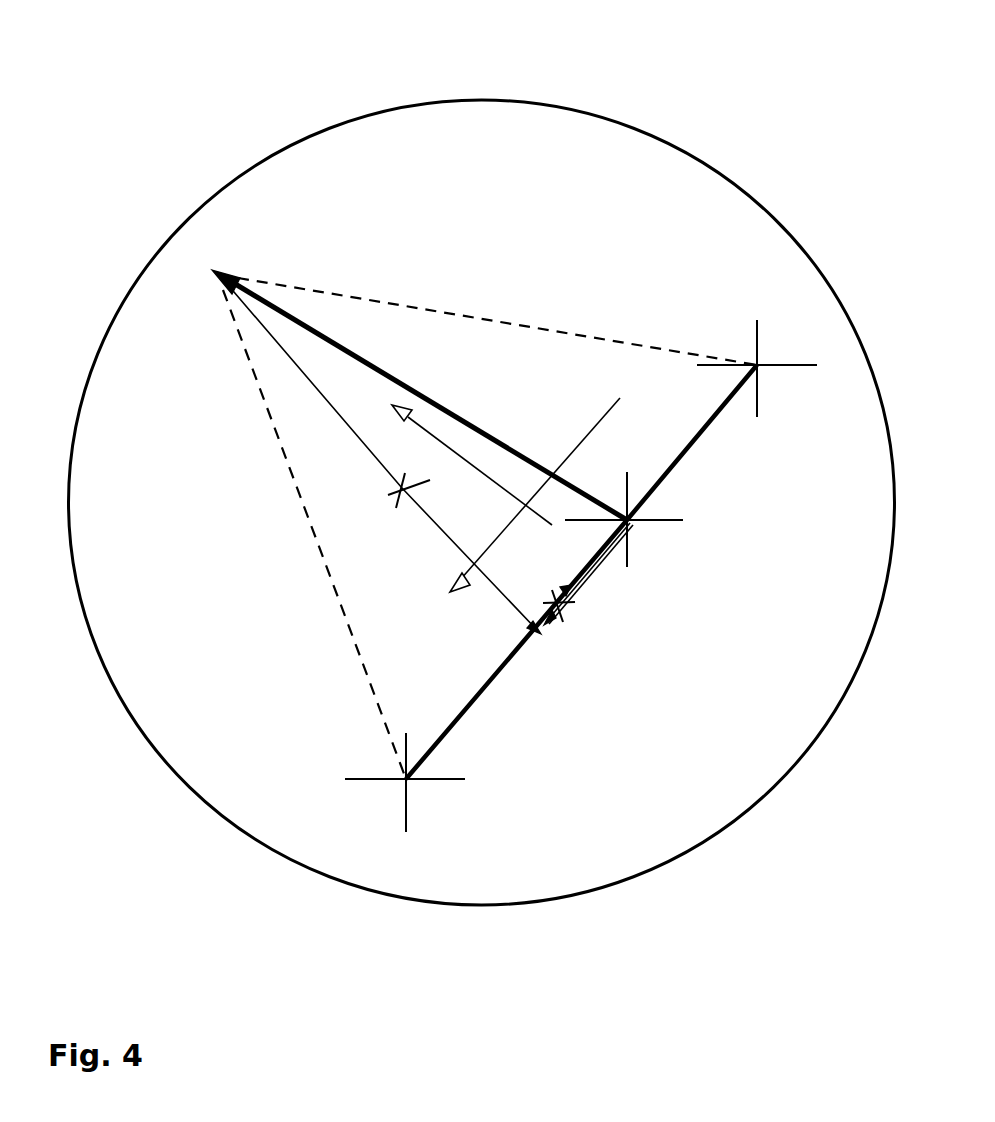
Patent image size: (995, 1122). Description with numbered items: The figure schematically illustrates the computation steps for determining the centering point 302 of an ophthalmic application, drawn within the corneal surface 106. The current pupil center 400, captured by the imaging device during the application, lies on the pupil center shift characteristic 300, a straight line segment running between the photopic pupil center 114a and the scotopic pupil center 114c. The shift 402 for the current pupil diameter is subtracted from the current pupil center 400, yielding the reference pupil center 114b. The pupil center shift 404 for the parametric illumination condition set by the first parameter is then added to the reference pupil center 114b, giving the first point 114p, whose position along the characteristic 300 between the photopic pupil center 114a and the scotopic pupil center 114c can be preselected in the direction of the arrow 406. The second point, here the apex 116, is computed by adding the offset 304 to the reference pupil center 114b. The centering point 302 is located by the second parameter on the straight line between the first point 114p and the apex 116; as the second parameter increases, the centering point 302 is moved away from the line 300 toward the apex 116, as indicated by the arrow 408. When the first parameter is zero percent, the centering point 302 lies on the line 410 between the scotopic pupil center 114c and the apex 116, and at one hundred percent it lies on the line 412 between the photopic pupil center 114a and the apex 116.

The corneal surface 106 is at (320, 167).
The apex 116 is at (216, 262).
The photopic pupil center 114a is at (410, 785).
The reference pupil center 114b is at (632, 527).
The scotopic pupil center 114c is at (762, 370).
The first point 114p is at (545, 630).
The pupil center shift characteristic 300 is at (470, 707).
The centering point 302 is at (402, 495).
The offset 304 is at (463, 418).
The current pupil center 400 is at (560, 605).
The shift 402 is at (585, 563).
The pupil center shift 404 is at (597, 568).
The arrow 406 is at (585, 445).
The arrow 408 is at (480, 477).
The line 410 is at (493, 320).
The line 412 is at (328, 575).